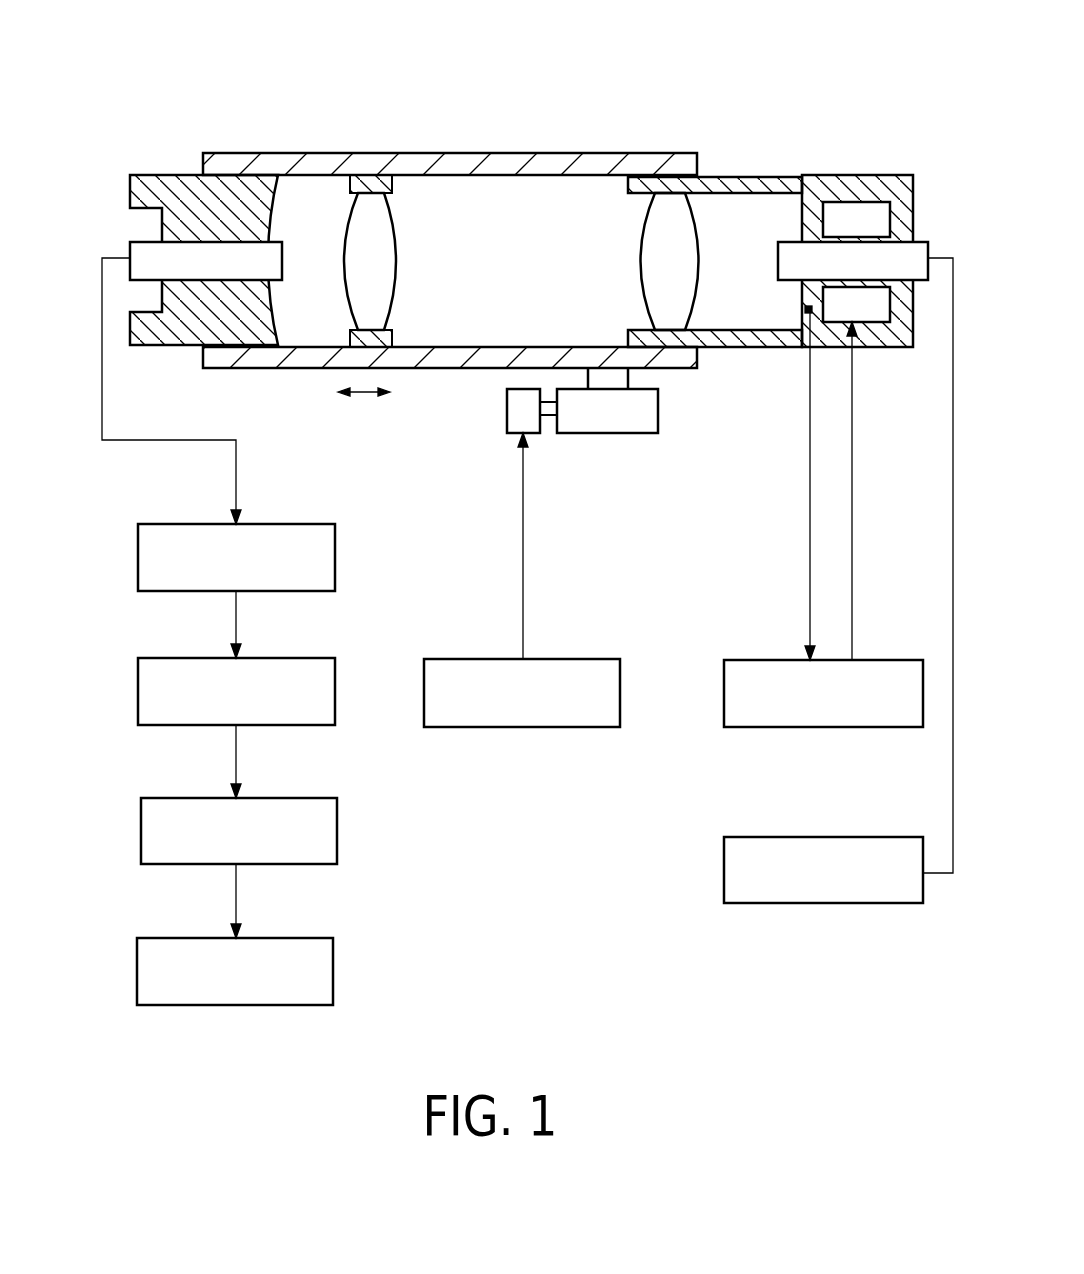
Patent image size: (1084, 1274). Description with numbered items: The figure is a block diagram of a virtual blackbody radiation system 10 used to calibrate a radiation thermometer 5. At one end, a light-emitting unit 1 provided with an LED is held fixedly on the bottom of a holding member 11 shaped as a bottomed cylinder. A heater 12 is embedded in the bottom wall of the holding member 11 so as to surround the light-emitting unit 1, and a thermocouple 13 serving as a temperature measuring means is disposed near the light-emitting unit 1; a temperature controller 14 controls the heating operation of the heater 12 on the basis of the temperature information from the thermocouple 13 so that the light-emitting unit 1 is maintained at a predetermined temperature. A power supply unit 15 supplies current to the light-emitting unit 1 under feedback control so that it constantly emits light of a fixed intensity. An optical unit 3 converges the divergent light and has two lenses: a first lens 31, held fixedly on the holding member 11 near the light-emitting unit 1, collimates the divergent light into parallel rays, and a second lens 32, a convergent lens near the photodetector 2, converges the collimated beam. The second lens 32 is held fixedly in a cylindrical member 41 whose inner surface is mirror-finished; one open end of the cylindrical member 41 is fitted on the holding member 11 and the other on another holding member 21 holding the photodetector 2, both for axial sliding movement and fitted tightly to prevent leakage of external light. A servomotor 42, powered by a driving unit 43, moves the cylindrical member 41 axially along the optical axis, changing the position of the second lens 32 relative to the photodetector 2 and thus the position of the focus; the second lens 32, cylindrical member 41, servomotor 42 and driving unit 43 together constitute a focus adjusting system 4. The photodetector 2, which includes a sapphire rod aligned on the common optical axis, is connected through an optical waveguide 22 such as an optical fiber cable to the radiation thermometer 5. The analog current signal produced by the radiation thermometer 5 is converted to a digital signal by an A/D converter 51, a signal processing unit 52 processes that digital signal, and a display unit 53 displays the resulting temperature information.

The virtual blackbody radiation system 10 is at (525, 253).
The light-emitting unit 1 is at (920, 240).
The photodetector 2 is at (131, 240).
The holding member 21 is at (184, 162).
The optical waveguide 22 is at (102, 403).
The optical unit 3 is at (548, 200).
The first lens 31 is at (694, 222).
The second lens 32 is at (404, 206).
The focus adjusting system 4 is at (533, 437).
The cylindrical member 41 is at (284, 156).
The servomotor 42 is at (603, 438).
The driving unit 43 is at (578, 659).
The holding member 11 is at (797, 176).
The heater 12 is at (858, 220).
The thermocouple 13 is at (806, 313).
The temperature controller 14 is at (744, 660).
The power supply unit 15 is at (744, 837).
The radiation thermometer 5 is at (335, 550).
The A/D converter 51 is at (335, 675).
The signal processing unit 52 is at (337, 838).
The display unit 53 is at (333, 960).